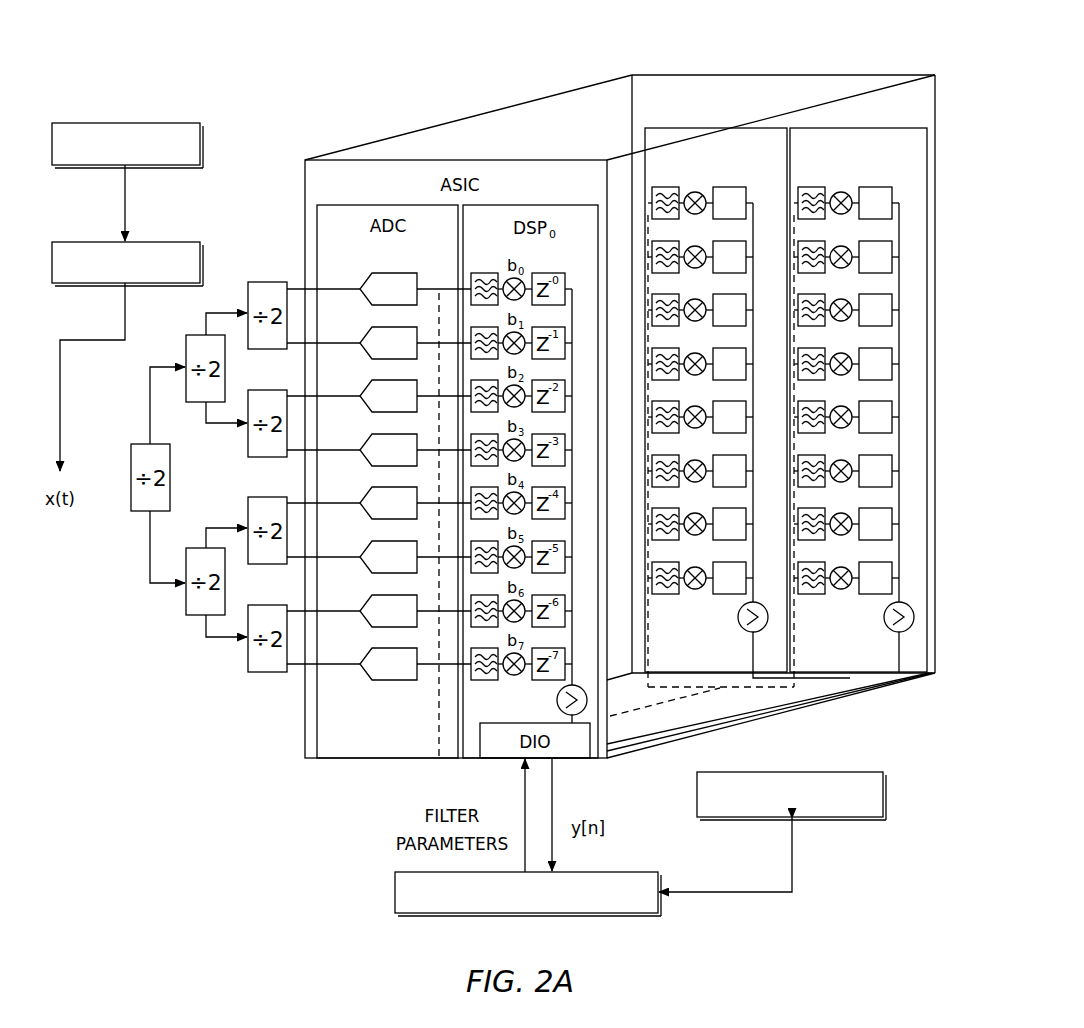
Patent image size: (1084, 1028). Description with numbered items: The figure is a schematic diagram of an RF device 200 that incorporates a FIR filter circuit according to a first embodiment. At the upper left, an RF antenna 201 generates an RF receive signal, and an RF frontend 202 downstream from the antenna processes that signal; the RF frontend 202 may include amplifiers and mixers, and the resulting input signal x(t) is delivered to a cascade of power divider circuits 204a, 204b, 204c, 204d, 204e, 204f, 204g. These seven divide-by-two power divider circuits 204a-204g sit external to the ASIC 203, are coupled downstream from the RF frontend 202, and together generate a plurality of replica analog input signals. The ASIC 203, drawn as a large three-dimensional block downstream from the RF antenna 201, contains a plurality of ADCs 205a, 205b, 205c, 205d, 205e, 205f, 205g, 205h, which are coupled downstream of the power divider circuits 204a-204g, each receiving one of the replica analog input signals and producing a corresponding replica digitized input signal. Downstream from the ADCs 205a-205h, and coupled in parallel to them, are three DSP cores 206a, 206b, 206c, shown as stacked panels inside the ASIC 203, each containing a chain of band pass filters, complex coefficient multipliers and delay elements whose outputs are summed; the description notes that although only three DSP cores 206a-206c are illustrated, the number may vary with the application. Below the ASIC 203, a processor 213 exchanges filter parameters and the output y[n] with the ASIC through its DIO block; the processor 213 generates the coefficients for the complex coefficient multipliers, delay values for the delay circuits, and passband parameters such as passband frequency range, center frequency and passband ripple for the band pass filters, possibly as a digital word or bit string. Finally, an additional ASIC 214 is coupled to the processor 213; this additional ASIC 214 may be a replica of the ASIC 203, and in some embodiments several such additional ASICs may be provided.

The RF device 200 is at (527, 70).
The RF antenna 201 is at (110, 122).
The RF frontend 202 is at (110, 241).
The ASIC 203 is at (858, 70).
The power divider circuit 204a is at (247, 290).
The power divider circuit 204b is at (185, 350).
The power divider circuit 204c is at (247, 442).
The power divider circuit 204d is at (130, 465).
The power divider circuit 204e is at (247, 510).
The power divider circuit 204f is at (185, 598).
The power divider circuit 204g is at (247, 658).
The ADC 205a is at (389, 272).
The ADC 205b is at (389, 326).
The ADC 205c is at (389, 379).
The ADC 205d is at (389, 433).
The ADC 205e is at (389, 486).
The ADC 205f is at (389, 540).
The ADC 205g is at (389, 594).
The ADC 205h is at (389, 647).
The DSP core 206a is at (436, 700).
The DSP core 206b is at (716, 124).
The DSP core 206c is at (834, 124).
The processor 213 is at (394, 893).
The additional ASIC 214 is at (843, 771).